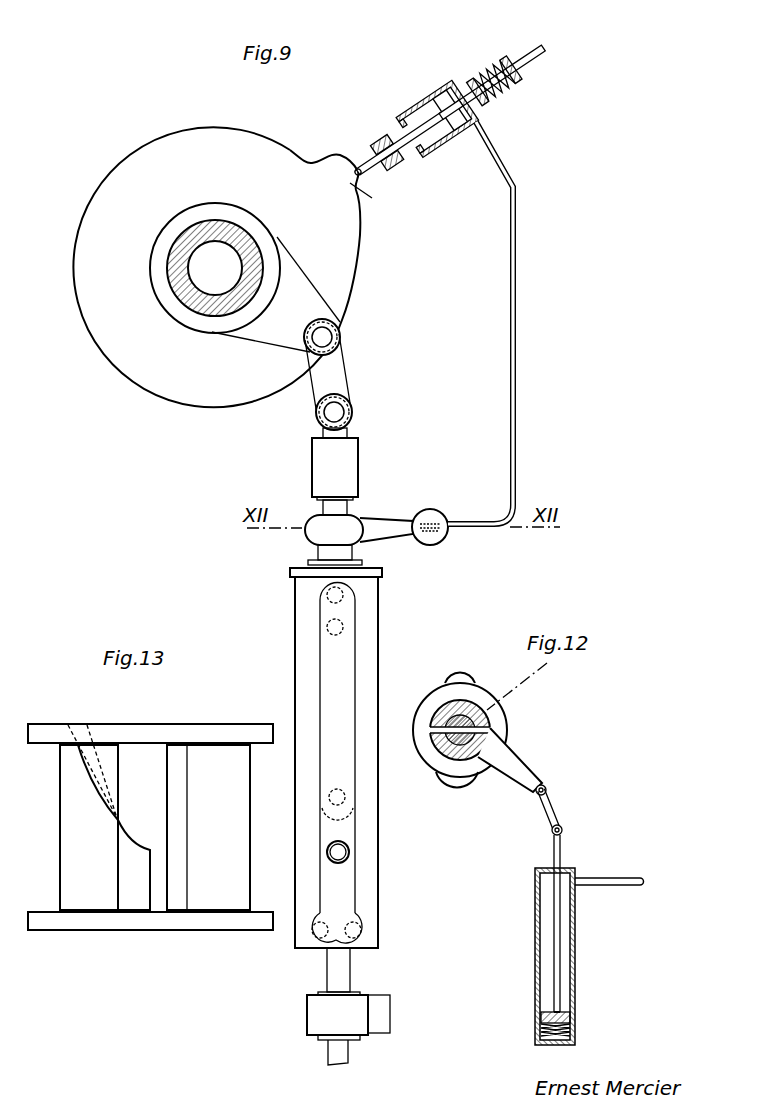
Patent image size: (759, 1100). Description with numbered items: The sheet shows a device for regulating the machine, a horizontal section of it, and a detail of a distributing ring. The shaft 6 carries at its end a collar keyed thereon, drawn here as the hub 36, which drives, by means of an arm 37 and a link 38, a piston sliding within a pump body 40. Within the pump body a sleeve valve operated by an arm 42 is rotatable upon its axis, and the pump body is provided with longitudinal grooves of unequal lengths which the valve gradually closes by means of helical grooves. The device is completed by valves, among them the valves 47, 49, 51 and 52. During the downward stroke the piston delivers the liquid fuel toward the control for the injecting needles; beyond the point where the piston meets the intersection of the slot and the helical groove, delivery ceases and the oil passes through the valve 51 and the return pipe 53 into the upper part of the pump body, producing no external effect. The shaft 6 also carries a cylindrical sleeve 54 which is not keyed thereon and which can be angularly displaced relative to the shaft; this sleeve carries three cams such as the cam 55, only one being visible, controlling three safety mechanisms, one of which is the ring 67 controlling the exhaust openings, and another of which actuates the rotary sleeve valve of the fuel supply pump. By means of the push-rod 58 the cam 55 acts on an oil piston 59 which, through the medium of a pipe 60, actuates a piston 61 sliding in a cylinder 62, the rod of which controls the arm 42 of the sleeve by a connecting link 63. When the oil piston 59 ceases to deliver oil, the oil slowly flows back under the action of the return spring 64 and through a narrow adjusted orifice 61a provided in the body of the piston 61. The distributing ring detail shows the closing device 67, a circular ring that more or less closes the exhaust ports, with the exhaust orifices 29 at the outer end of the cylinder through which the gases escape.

In FIG. 9, the shaft 6 is at (193, 230).
In FIG. 13, the orifices 29 is at (155, 817).
In FIG. 9, the hub 36 is at (205, 327).
In FIG. 9, the arm 37 is at (295, 283).
In FIG. 9, the link 38 is at (330, 372).
In FIG. 9, the pump body 40 is at (310, 662).
In FIG. 12, the pump body 40 is at (435, 690).
In FIG. 9, the arm 42 is at (382, 532).
In FIG. 12, the arm 42 is at (493, 748).
In FIG. 9, the valve 47 is at (360, 932).
In FIG. 9, the valve 49 is at (327, 595).
In FIG. 9, the valve 51 is at (317, 933).
In FIG. 9, the valve 52 is at (327, 627).
In FIG. 9, the return pipe 53 is at (338, 863).
In FIG. 9, the cylindrical sleeve 54 is at (225, 138).
In FIG. 9, the cam 55 is at (373, 197).
In FIG. 9, the push-rod 58 is at (402, 140).
In FIG. 9, the oil piston 59 is at (440, 102).
In FIG. 9, the pipe 60 is at (513, 327).
In FIG. 12, the pipe 60 is at (613, 883).
In FIG. 12, the piston 61 is at (541, 1018).
In FIG. 12, the narrow adjusted orifice 61a is at (565, 1010).
In FIG. 9, the cylinder 62 is at (436, 520).
In FIG. 12, the cylinder 62 is at (535, 930).
In FIG. 12, the connecting link 63 is at (552, 812).
In FIG. 9, the return spring 64 is at (510, 97).
In FIG. 12, the return spring 64 is at (541, 1032).
In FIG. 13, the ring 67 is at (235, 732).